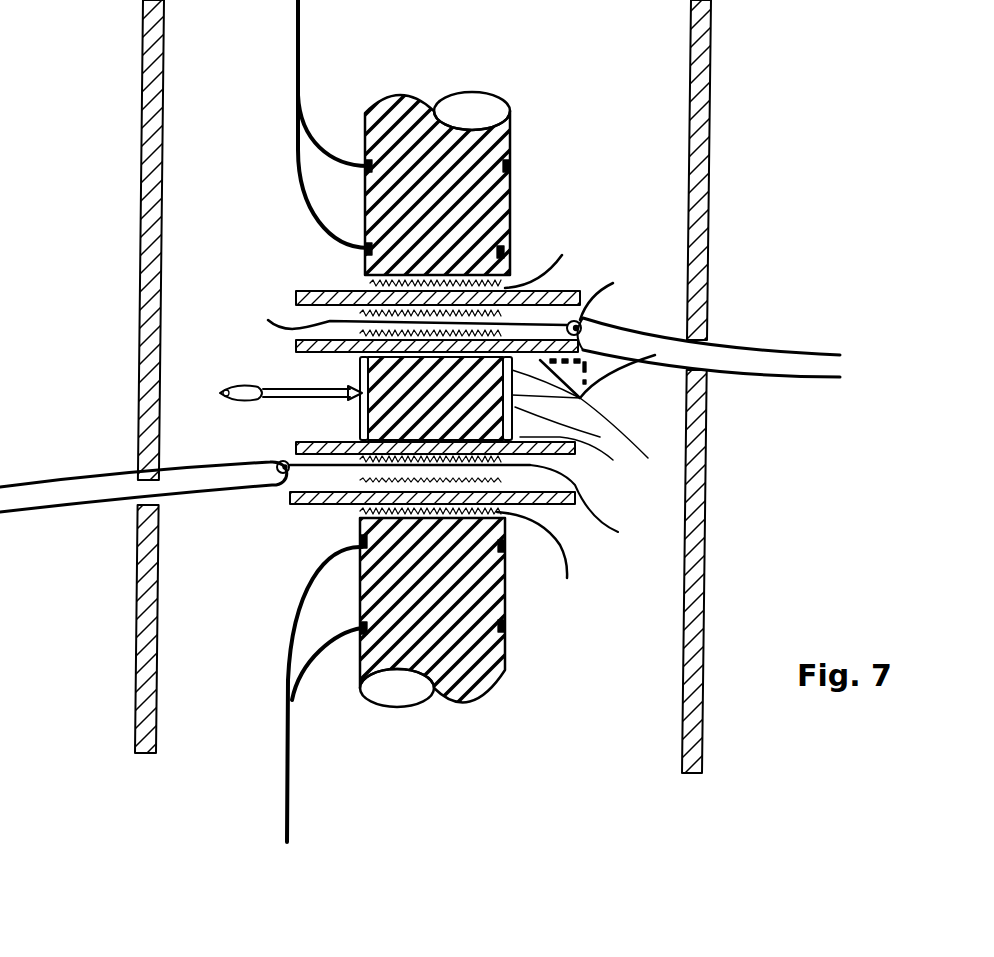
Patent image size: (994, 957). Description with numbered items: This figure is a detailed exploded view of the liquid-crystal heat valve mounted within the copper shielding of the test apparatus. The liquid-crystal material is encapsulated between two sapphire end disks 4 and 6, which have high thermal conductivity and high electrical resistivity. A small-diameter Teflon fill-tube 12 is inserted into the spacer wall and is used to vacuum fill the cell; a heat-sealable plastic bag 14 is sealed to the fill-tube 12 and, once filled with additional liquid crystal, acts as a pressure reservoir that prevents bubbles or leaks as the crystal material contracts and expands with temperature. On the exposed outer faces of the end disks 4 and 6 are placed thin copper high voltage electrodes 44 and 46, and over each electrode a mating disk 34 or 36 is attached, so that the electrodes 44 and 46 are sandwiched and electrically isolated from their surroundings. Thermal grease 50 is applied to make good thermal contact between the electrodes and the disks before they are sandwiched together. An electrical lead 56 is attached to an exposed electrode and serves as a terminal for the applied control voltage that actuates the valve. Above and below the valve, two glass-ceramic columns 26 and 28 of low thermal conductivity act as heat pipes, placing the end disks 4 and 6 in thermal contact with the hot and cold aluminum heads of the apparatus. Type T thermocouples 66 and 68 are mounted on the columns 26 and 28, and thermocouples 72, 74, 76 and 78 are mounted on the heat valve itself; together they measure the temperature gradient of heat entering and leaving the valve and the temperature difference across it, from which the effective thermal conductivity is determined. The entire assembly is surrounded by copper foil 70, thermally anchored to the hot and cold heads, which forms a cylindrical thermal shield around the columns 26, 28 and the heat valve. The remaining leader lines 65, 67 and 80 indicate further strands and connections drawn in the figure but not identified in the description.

The end disk 4 is at (313, 357).
The end disk 6 is at (327, 440).
The fill-tube 12 is at (284, 402).
The plastic bag 14 is at (225, 390).
The column 26 is at (510, 195).
The column 28 is at (505, 603).
The mating disk 34 is at (297, 294).
The mating disk 36 is at (308, 508).
The high voltage electrode 44 is at (402, 325).
The high voltage electrode 46 is at (590, 505).
The thermal grease 50 is at (558, 300).
The electrical lead 56 is at (284, 460).
The upper strand 65 is at (324, 140).
The thermocouple 66 is at (300, 186).
The lower strand branch 67 is at (335, 640).
The thermocouple 68 is at (303, 565).
The copper foil 70 is at (164, 197).
The thermocouple 72 is at (588, 368).
The thermocouple 74 is at (583, 412).
The thermocouple 76 is at (600, 437).
The thermocouple 78 is at (628, 448).
The fiber 80 is at (575, 467).